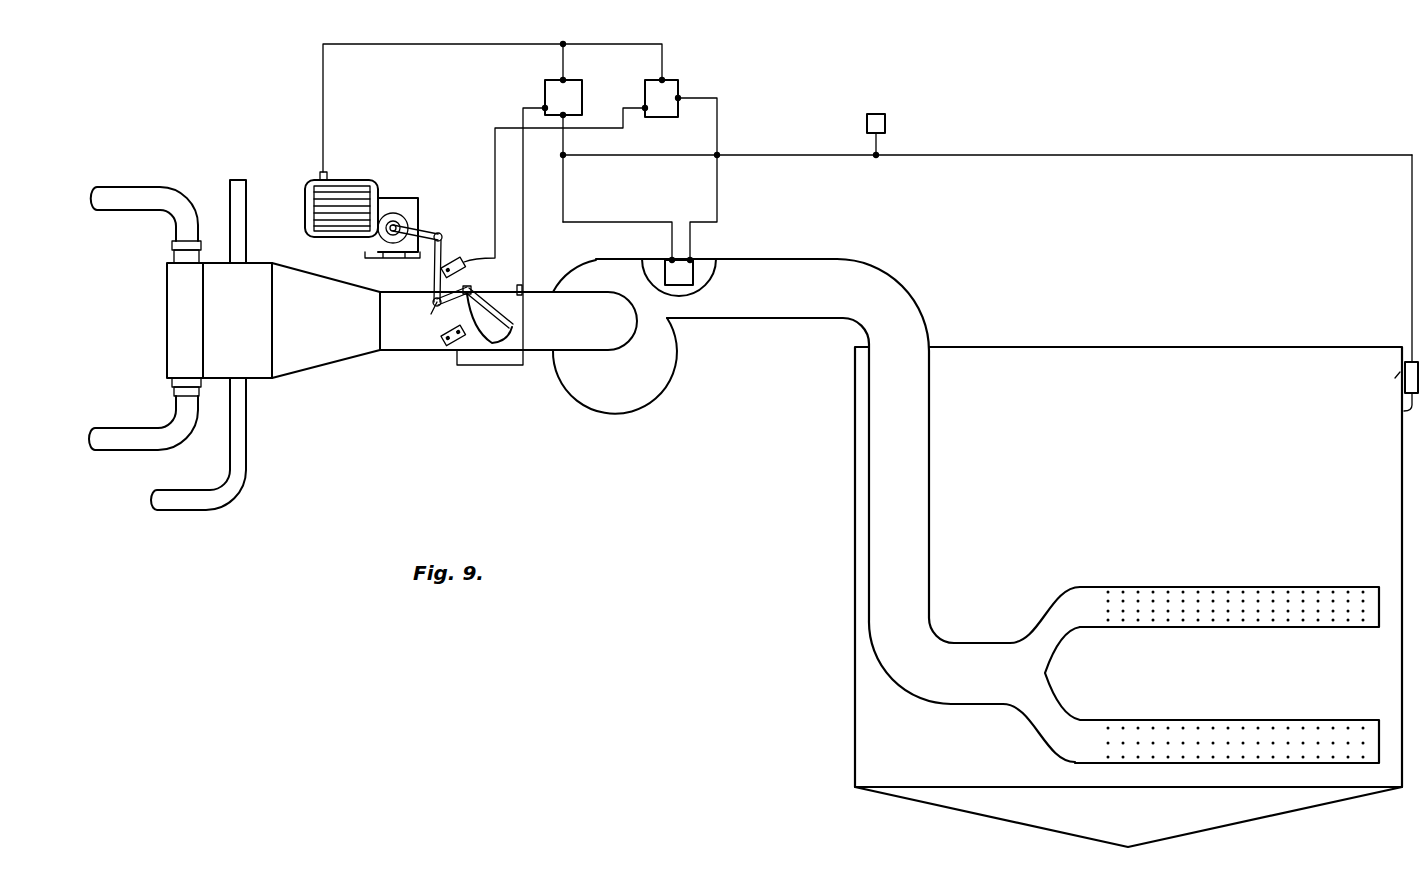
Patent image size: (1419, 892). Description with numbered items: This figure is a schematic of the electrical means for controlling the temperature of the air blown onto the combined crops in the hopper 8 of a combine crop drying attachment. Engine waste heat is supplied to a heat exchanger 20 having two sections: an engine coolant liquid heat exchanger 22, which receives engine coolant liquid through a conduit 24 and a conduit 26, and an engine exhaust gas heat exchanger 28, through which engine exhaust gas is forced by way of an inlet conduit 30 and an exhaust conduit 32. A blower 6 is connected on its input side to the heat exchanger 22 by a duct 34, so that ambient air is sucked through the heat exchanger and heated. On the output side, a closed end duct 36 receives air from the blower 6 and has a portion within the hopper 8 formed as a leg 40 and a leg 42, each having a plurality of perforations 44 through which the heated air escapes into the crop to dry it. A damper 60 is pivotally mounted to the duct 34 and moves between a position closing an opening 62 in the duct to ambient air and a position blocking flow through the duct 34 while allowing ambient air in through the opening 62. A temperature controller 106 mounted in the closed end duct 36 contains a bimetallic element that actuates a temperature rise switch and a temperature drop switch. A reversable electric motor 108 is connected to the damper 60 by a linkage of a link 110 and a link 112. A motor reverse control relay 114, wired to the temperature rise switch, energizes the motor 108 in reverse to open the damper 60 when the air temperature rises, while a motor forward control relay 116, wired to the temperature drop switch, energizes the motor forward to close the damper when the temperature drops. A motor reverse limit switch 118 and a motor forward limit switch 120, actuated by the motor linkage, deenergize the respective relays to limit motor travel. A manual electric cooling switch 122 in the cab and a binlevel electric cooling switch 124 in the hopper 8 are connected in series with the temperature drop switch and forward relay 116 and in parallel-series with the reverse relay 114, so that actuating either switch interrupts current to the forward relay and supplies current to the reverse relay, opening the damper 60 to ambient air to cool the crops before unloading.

The blower 6 is at (638, 360).
The hopper 8 is at (1128, 597).
The heat exchanger 20 is at (150, 297).
The engine coolant liquid heat exchanger 22 is at (176, 343).
The conduit 24 is at (118, 452).
The conduit 26 is at (137, 184).
The engine exhaust gas heat exchanger 28 is at (262, 320).
The inlet conduit 30 is at (247, 492).
The exhaust conduit 32 is at (247, 186).
The duct 34 is at (335, 353).
The closed end duct 36 is at (925, 490).
The leg 40 is at (1362, 721).
The leg 42 is at (1290, 628).
The perforations 44 is at (1180, 622).
The damper 60 is at (513, 328).
The opening 62 is at (520, 290).
The temperature controller 106 is at (695, 276).
The reversable electric motor 108 is at (410, 198).
The link 110 is at (443, 240).
The link 112 is at (434, 283).
The motor reverse control relay 114 is at (678, 80).
The motor forward control relay 116 is at (545, 80).
The motor reverse limit switch 118 is at (470, 270).
The motor forward limit switch 120 is at (450, 343).
The manual electric cooling switch 122 is at (885, 116).
The binlevel electric cooling switch 124 is at (1403, 423).